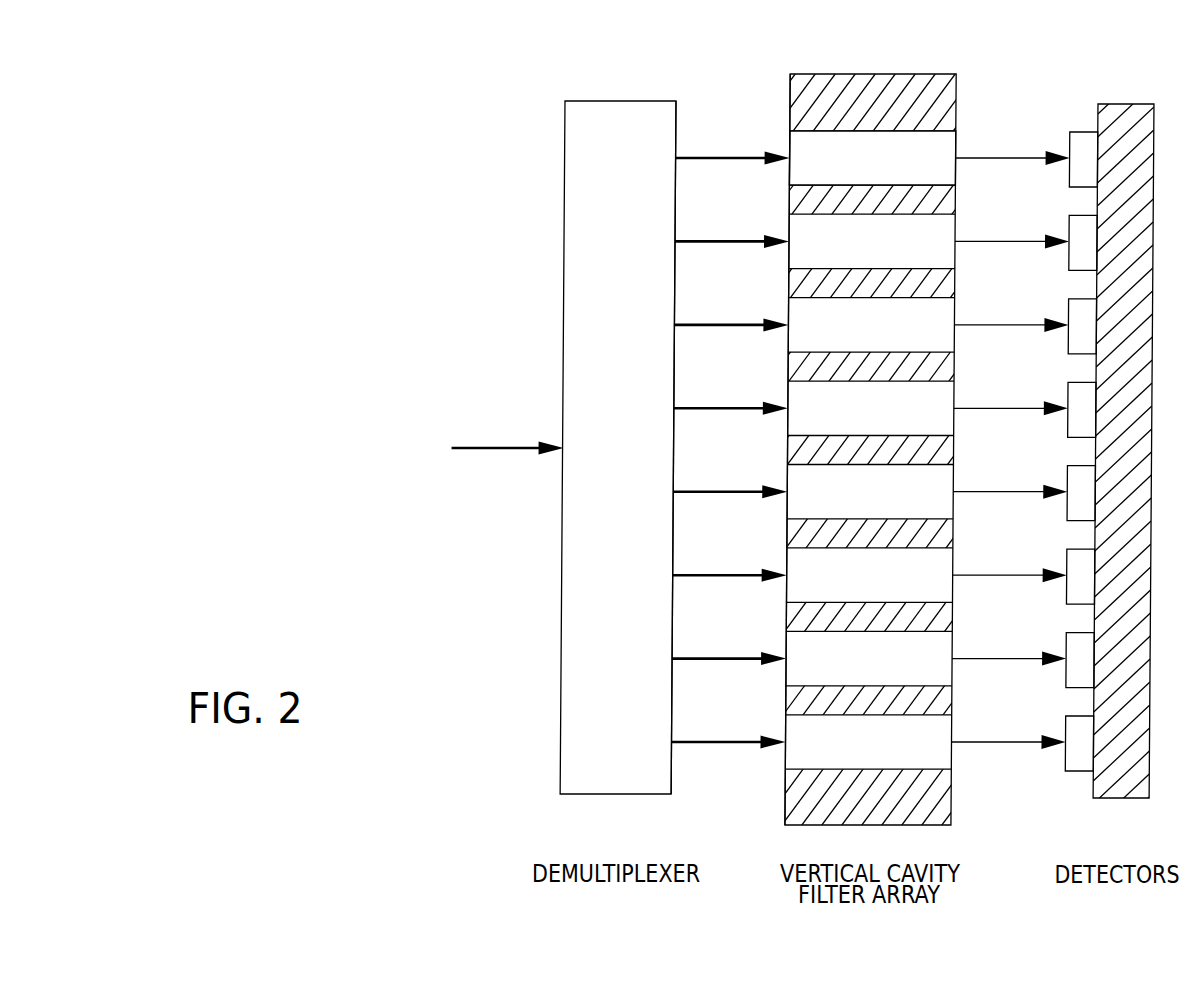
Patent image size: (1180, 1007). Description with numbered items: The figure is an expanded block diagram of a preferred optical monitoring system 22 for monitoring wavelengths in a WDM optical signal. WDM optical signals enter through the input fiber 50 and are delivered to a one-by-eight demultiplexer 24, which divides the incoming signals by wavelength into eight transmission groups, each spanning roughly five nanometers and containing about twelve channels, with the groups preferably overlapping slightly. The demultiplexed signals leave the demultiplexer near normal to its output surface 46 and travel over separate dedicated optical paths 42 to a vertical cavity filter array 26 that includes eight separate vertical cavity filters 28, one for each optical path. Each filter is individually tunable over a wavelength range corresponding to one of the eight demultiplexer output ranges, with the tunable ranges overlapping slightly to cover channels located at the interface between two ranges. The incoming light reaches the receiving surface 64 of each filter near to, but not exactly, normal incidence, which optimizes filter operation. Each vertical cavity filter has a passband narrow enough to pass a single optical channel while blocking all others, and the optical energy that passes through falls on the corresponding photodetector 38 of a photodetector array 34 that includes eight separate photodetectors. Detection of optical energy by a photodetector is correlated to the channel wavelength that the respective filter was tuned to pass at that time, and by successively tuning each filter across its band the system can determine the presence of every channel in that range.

The optical monitoring system 22 is at (433, 95).
The demultiplexer 24 is at (600, 101).
The vertical cavity filter array 26 is at (790, 72).
The vertical cavity filter 28 is at (861, 174).
The photodetector array 34 is at (1155, 103).
The photodetector 38 is at (1068, 138).
The optical path 42 is at (749, 153).
The output surface of the demultiplexer 46 is at (677, 110).
The input fiber 50 is at (474, 446).
The receiving surface of the filter 64 is at (788, 153).